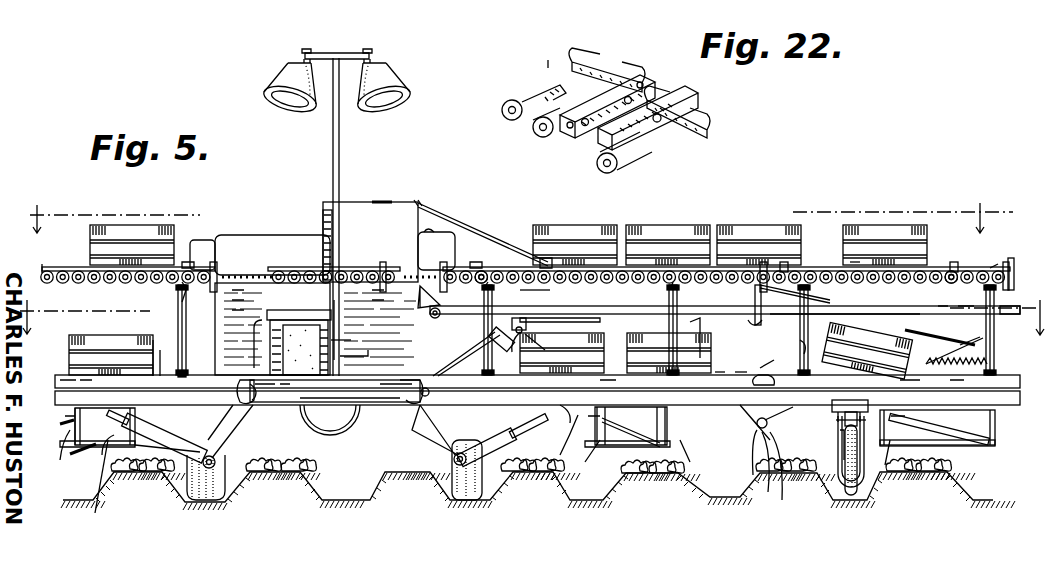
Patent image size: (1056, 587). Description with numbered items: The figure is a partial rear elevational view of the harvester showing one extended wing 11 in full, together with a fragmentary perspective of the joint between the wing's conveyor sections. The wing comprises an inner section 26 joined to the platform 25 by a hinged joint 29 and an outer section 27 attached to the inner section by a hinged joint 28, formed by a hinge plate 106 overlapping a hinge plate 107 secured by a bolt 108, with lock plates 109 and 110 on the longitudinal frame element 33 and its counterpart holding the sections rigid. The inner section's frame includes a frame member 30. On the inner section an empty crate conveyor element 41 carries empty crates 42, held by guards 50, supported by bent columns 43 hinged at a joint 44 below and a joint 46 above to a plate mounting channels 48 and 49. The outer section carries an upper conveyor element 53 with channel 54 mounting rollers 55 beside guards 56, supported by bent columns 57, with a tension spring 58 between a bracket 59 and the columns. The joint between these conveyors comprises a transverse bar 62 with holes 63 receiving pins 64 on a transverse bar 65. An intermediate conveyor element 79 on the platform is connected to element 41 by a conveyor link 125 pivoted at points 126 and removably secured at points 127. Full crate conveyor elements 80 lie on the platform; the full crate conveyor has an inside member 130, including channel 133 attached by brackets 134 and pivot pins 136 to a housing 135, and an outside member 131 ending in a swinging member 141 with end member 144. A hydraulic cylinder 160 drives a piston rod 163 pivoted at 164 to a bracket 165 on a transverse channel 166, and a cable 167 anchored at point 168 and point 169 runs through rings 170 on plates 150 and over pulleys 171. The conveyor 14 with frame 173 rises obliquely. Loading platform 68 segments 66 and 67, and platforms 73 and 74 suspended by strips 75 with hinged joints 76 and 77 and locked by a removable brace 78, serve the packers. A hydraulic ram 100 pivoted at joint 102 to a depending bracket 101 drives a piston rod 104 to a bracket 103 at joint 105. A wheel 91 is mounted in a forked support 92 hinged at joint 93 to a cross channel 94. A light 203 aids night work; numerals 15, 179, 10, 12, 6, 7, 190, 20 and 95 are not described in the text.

In FIG. 5, the light 203 is at (283, 84).
In FIG. 5, the ring 170 is at (340, 352).
In FIG. 5, the pulley 171 is at (340, 328).
In FIG. 5, the control box 15 is at (370, 197).
In FIG. 5, the housing 135 is at (390, 200).
In FIG. 5, the cable attachment point 168 is at (420, 200).
In FIG. 5, the cable 167 is at (470, 213).
In FIG. 5, the ladder frame 179 is at (316, 205).
In FIG. 5, the cabinet 10 is at (294, 230).
In FIG. 5, the conveyor 14 is at (342, 343).
In FIG. 5, the frame 173 is at (260, 330).
In FIG. 5, the bracket 134 is at (354, 342).
In FIG. 5, the pivot pin 136 is at (368, 358).
In FIG. 5, the conveyor link 125 is at (218, 274).
In FIG. 5, the removable securing point 127 is at (440, 273).
In FIG. 5, the roller conveyor 12 is at (157, 199).
In FIG. 5, the wing 11 is at (854, 169).
In FIG. 5, the guard 50 is at (50, 265).
In FIG. 5, the intermediate empty crate conveyor element 79 is at (350, 268).
In FIG. 5, the empty crate conveyor element 41 is at (194, 258).
In FIG. 22, the empty crate conveyor element 41 is at (551, 56).
In FIG. 5, the channel 49 is at (494, 273).
In FIG. 22, the channel 49 is at (526, 97).
In FIG. 5, the upper conveyor element 53 is at (814, 266).
In FIG. 5, the guard 56 is at (1016, 262).
In FIG. 5, the section line 6- 6 is at (521, 209).
In FIG. 5, the section line 7- 7 is at (531, 308).
In FIG. 5, the empty crate 42 is at (168, 218).
In FIG. 5, the inside member 130 is at (632, 306).
In FIG. 5, the outside member 131 is at (912, 295).
In FIG. 5, the longitudinal channel 133 is at (560, 324).
In FIG. 5, the transverse channel 166 is at (548, 290).
In FIG. 5, the bent column 43 is at (178, 298).
In FIG. 5, the hinged joint 46 is at (190, 286).
In FIG. 5, the bent column 57 is at (802, 325).
In FIG. 5, the plate 150 is at (750, 299).
In FIG. 5, the cable attachment point 169 is at (830, 302).
In FIG. 5, the tension spring 58 is at (988, 320).
In FIG. 5, the bracket 59 is at (932, 361).
In FIG. 5, the swinging member 141 is at (940, 335).
In FIG. 5, the end member 144 is at (690, 346).
In FIG. 5, the link 190 is at (800, 346).
In FIG. 5, the lock plate 109 is at (775, 358).
In FIG. 5, the lock plate 110 is at (762, 376).
In FIG. 5, the bearing 20 is at (738, 372).
In FIG. 5, the longitudinal frame element 33 is at (722, 374).
In FIG. 5, the hydraulic cylinder 160 is at (472, 347).
In FIG. 5, the bracket 165 is at (527, 325).
In FIG. 5, the piston rod 163 is at (525, 336).
In FIG. 5, the pivot 164 is at (548, 338).
In FIG. 5, the hinged joint 44 is at (454, 360).
In FIG. 5, the pivot point 126 is at (256, 298).
In FIG. 5, the inner section 26 is at (50, 399).
In FIG. 5, the outer section 27 is at (1024, 390).
In FIG. 5, the full crate conveyor element 80 is at (300, 413).
In FIG. 5, the hinged joint 29 is at (252, 382).
In FIG. 5, the frame member 30 is at (154, 362).
In FIG. 5, the loading platform 68 is at (730, 436).
In FIG. 5, the hydraulic ram 100 is at (186, 472).
In FIG. 5, the joint 102 is at (208, 500).
In FIG. 5, the depending bracket 101 is at (218, 470).
In FIG. 5, the loading platform segment 66 is at (175, 406).
In FIG. 5, the platform 73 is at (100, 451).
In FIG. 5, the bracket 103 is at (98, 458).
In FIG. 5, the joint 105 is at (335, 459).
In FIG. 5, the piston rod 104 is at (548, 472).
In FIG. 5, the platform 25 is at (358, 458).
In FIG. 5, the strip 75 is at (585, 466).
In FIG. 5, the hinged joint 76 is at (938, 417).
In FIG. 5, the removable brace 78 is at (985, 452).
In FIG. 5, the hinged joint 77 is at (946, 432).
In FIG. 5, the loading platform segment 67 is at (937, 427).
In FIG. 5, the platform 74 is at (996, 459).
In FIG. 5, the wheel 91 is at (849, 503).
In FIG. 5, the hinged joint 93 is at (858, 420).
In FIG. 5, the cross channel 94 is at (838, 433).
In FIG. 5, the collar 95 is at (834, 425).
In FIG. 5, the forked support 92 is at (838, 440).
In FIG. 5, the hinge plate 106 is at (750, 452).
In FIG. 5, the hinged joint 28 is at (756, 446).
In FIG. 5, the bolt 108 is at (769, 468).
In FIG. 5, the hinge plate 107 is at (786, 472).
In FIG. 22, the transverse bar 62 is at (598, 103).
In FIG. 22, the channel 48 is at (610, 71).
In FIG. 22, the hole 63 is at (642, 86).
In FIG. 22, the pin 64 is at (670, 96).
In FIG. 22, the channel 54 is at (712, 112).
In FIG. 22, the transverse bar 65 is at (658, 125).
In FIG. 22, the roller 55 is at (653, 154).